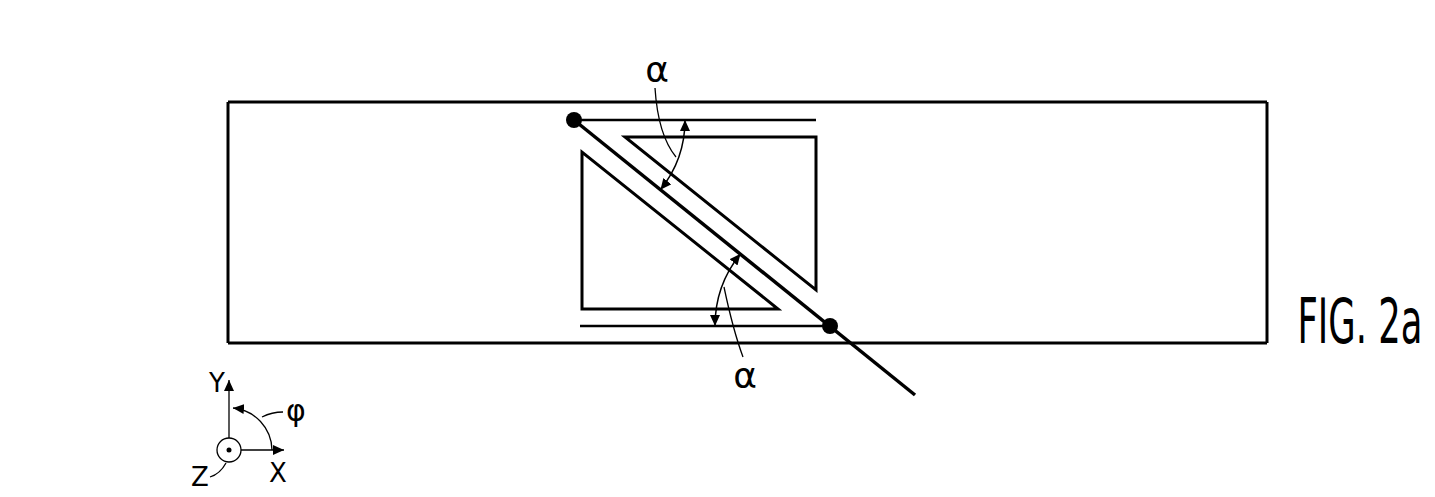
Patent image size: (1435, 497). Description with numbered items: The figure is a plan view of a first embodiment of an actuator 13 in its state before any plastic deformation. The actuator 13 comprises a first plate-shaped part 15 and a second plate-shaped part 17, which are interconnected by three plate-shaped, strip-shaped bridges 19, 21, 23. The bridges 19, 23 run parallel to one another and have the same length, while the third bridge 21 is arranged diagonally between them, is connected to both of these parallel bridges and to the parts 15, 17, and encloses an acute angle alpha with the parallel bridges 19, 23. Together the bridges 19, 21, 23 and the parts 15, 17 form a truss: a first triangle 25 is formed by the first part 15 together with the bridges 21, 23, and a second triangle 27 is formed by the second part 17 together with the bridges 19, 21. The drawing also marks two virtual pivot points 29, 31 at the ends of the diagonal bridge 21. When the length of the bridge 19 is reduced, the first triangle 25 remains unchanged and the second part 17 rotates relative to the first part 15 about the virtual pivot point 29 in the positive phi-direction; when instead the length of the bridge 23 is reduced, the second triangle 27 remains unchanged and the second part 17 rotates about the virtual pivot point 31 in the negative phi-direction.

The actuator 13 is at (1022, 78).
The first plate-shaped part 15 is at (377, 322).
The second plate-shaped part 17 is at (1065, 325).
The bridge 19 is at (727, 128).
The third bridge 21 is at (681, 215).
The bridge 23 is at (657, 332).
The first triangle 25 is at (607, 296).
The second triangle 27 is at (785, 155).
The virtual pivot point 29 is at (822, 333).
The virtual pivot point 31 is at (572, 112).